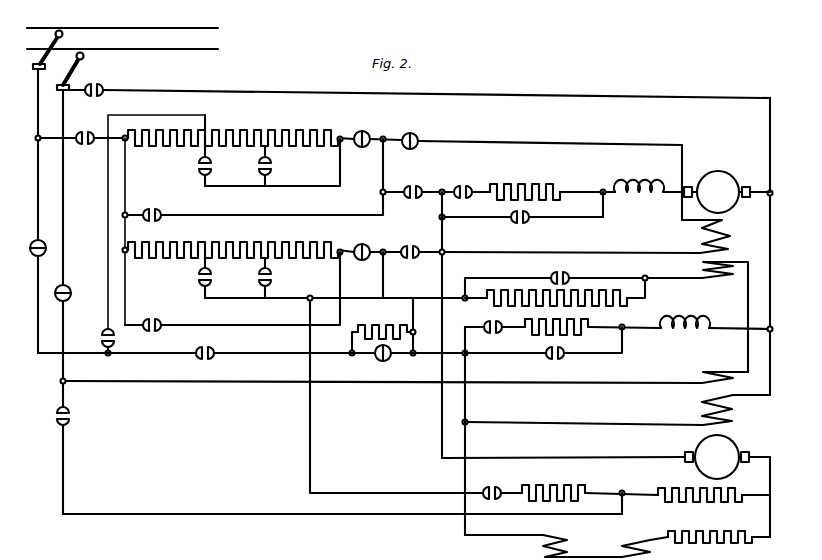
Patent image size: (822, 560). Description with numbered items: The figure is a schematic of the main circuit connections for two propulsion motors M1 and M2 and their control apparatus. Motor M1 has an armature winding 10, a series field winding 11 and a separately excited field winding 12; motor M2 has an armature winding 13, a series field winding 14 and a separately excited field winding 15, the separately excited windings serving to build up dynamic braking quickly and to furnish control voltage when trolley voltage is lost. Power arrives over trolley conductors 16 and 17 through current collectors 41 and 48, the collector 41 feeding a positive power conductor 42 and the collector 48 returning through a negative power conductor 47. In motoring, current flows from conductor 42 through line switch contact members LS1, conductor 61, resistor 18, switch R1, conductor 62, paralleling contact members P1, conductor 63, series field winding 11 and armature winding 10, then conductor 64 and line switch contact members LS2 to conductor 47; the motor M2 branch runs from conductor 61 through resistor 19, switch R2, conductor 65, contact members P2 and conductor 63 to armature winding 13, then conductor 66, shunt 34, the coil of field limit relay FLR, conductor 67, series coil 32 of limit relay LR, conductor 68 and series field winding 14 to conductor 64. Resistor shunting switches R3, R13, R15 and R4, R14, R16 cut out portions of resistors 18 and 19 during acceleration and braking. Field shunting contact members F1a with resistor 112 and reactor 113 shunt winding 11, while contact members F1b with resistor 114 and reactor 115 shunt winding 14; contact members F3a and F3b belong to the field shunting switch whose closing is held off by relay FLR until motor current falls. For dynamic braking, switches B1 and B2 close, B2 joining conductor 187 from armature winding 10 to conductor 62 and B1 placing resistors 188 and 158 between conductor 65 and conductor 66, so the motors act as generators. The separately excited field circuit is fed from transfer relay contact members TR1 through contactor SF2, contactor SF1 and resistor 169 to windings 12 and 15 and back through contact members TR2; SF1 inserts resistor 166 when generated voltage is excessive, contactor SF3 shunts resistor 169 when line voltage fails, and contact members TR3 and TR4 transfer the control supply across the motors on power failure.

The trolley conductor 16 is at (122, 20).
The trolley conductor 17 is at (122, 41).
The current collector 41 is at (63, 36).
The current collector 48 is at (84, 58).
The contact members of line switch LS LS2 is at (104, 88).
The positive power conductor 42 is at (38, 135).
The contact members of line switch LS LS1 is at (101, 148).
The resistor 18 is at (233, 131).
The resistor shunting switch R1 is at (370, 131).
The braking switch B2 is at (409, 132).
The conductor 64 is at (438, 238).
The conductor 187 is at (550, 172).
The reactor 113 is at (638, 190).
The motor M1 is at (728, 169).
The armature winding 10 is at (731, 183).
The resistor shunting switch R13 is at (211, 166).
The resistor shunting switch R3 is at (271, 166).
The conductor 61 is at (127, 186).
The conductor 62 is at (384, 166).
The contact members of paralleling switch P P1 is at (420, 190).
The contact members of field shunting switch F1 F1a is at (465, 183).
The resistor 112 is at (548, 184).
The contact members of field shunting switch F3 F3a is at (522, 217).
The negative power conductor 47 is at (63, 199).
The resistor shunting switch R15 is at (147, 207).
The contact members of transfer relay TR TR1 is at (34, 246).
The resistor 19 is at (231, 243).
The resistor shunting switch R2 is at (370, 244).
The contact members of paralleling switch P P2 is at (421, 243).
The conductor 63 is at (570, 325).
The series field winding 11 is at (732, 242).
The resistor shunting switch R14 is at (221, 278).
The resistor shunting switch R4 is at (279, 278).
The conductor 65 is at (384, 283).
The contactor SF3 is at (583, 280).
The separately excited field winding 12 is at (702, 275).
The resistor 169 is at (546, 293).
The contact members of transfer relay TR TR2 is at (69, 290).
The resistor shunting switch R16 is at (232, 291).
The resistor 166 is at (383, 327).
The reactor 115 is at (707, 326).
The contact members of field shunting switch F1 F1b is at (495, 333).
The resistor 114 is at (593, 332).
The contact members of transfer relay TR TR3 is at (102, 342).
The contactor SF2 is at (197, 359).
The contactor SF1 is at (410, 362).
The contact members of field shunting switch F3 F3b is at (543, 351).
The separately excited field winding 15 is at (726, 384).
The conductor 68 is at (583, 469).
The series field winding 14 is at (703, 410).
The contact members of transfer relay TR TR4 is at (70, 420).
The motor M2 is at (740, 432).
The armature winding 13 is at (743, 441).
The braking switch B1 is at (502, 485).
The resistor 188 is at (590, 485).
The resistor 158 is at (706, 500).
The conductor 66 is at (770, 505).
The series coil of limit relay 32 is at (545, 548).
The limit relay LR is at (598, 548).
The conductor 67 is at (595, 551).
The field limit relay FLR is at (687, 545).
The shunt 34 is at (716, 543).